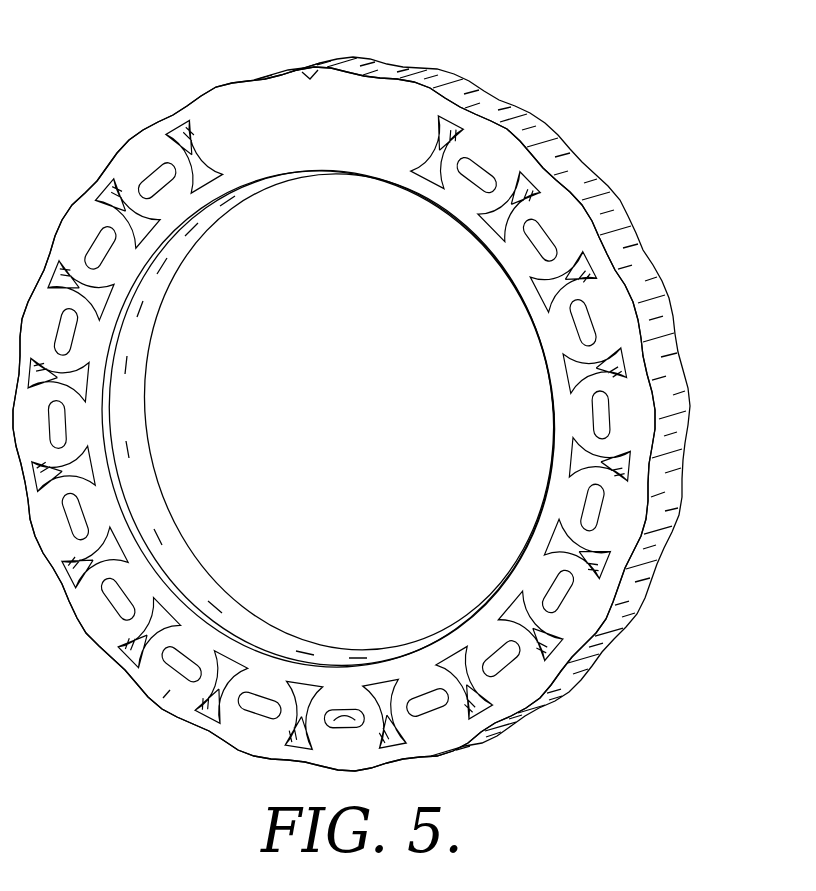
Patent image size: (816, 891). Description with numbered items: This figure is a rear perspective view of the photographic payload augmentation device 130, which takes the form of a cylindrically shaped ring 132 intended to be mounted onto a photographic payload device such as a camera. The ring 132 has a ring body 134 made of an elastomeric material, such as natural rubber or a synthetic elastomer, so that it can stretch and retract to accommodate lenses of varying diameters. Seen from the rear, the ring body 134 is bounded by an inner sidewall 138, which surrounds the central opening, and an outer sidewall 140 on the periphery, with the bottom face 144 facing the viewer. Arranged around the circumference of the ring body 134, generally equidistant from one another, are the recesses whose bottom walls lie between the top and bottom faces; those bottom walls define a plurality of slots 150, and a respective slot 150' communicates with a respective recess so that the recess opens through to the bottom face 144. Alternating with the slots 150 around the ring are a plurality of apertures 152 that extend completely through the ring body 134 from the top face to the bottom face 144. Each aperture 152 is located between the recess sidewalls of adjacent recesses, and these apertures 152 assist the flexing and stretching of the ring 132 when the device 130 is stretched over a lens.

The photographic payload augmentation device 130 is at (678, 140).
The ring 132 is at (212, 82).
The ring body 134 is at (397, 100).
The inner sidewall 138 is at (149, 468).
The outer sidewall 140 is at (639, 264).
The bottom face 144 is at (163, 698).
The slots 150 is at (332, 431).
The slot 150' is at (347, 656).
The apertures 152 is at (546, 184).